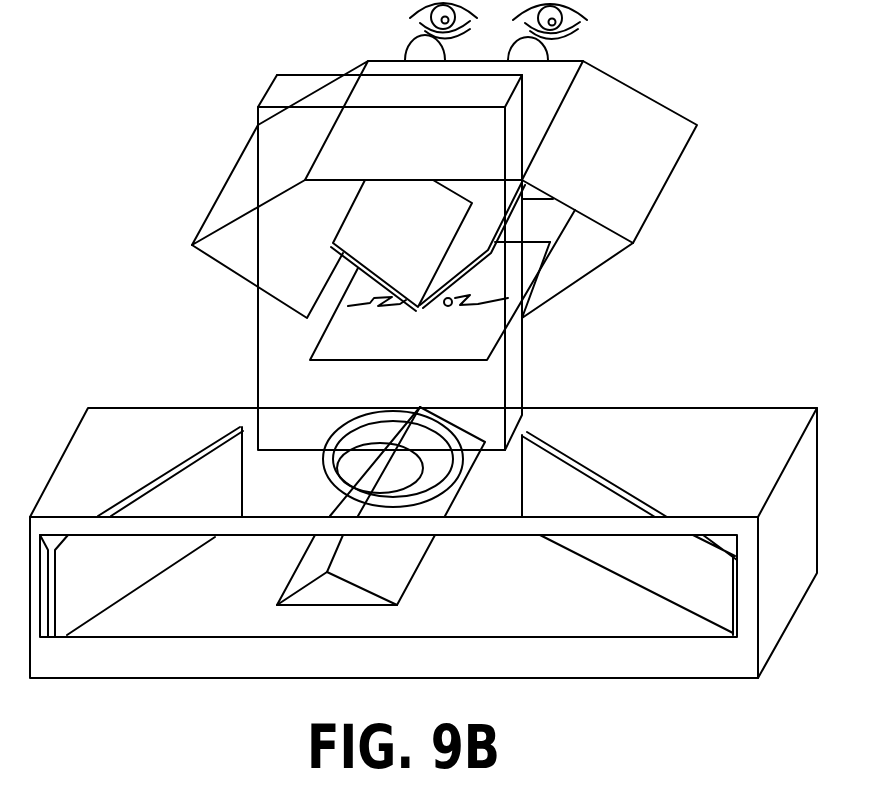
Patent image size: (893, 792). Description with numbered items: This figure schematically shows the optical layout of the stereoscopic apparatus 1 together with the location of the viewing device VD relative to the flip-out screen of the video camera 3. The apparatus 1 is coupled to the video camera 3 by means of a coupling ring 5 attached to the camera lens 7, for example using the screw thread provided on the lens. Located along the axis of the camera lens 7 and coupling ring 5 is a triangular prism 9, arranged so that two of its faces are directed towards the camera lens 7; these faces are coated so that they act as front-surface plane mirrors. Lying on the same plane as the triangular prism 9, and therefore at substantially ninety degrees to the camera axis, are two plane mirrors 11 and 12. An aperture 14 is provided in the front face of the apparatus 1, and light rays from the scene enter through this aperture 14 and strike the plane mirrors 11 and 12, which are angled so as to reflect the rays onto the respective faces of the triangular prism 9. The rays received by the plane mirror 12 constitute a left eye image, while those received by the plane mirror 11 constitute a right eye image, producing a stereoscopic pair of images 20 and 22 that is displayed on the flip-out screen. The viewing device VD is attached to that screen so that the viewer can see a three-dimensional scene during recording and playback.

The stereoscopic apparatus 1 is at (717, 442).
The video camera 3 is at (258, 358).
The coupling ring 5 is at (315, 423).
The camera lens 7 is at (400, 472).
The triangular prism 9 is at (380, 560).
The plane mirror 11 is at (212, 468).
The plane mirror 12 is at (562, 500).
The aperture 14 is at (198, 607).
The stereoscopic image 20 is at (453, 333).
The stereoscopic image 22 is at (365, 332).
The viewing device VD is at (617, 157).